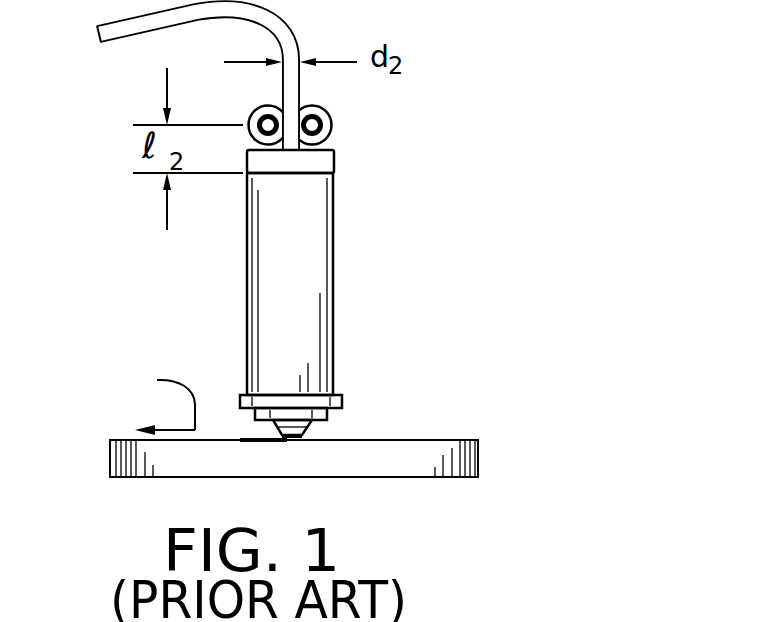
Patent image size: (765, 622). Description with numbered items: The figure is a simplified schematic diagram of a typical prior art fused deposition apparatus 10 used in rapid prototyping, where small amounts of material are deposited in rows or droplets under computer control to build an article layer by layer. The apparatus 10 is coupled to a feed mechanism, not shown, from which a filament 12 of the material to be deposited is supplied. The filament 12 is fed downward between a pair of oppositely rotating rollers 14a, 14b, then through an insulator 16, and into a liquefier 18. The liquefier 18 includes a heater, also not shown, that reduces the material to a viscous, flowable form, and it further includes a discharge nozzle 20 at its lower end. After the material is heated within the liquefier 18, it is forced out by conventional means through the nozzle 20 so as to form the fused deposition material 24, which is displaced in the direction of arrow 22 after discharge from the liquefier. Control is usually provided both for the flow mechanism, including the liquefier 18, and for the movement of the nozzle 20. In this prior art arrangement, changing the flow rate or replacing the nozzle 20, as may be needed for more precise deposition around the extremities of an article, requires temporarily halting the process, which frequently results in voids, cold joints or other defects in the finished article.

The fused deposition apparatus 10 is at (466, 156).
The filament 12 is at (117, 40).
The roller 14a is at (266, 107).
The roller 14b is at (327, 112).
The insulator 16 is at (334, 163).
The liquefier 18 is at (334, 298).
The discharge nozzle 20 is at (302, 432).
The arrow 22 is at (150, 401).
The fused deposition material 24 is at (437, 438).